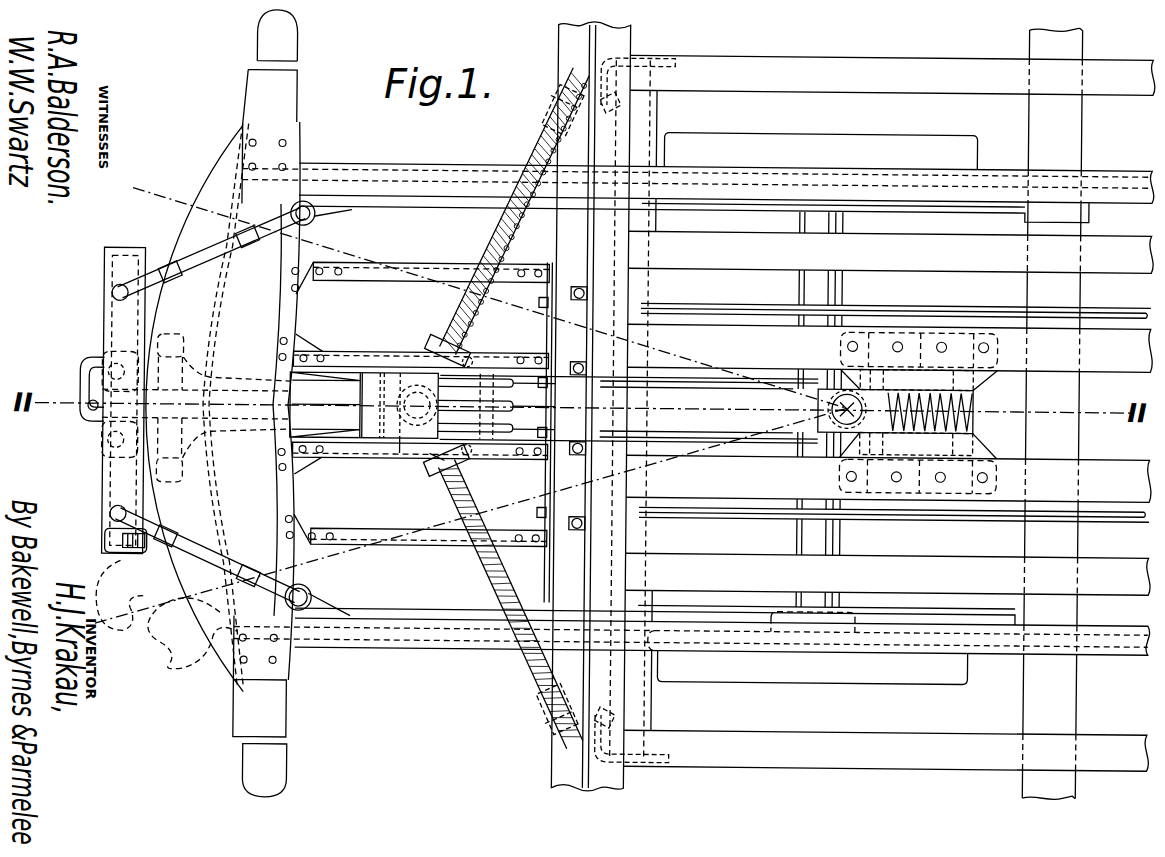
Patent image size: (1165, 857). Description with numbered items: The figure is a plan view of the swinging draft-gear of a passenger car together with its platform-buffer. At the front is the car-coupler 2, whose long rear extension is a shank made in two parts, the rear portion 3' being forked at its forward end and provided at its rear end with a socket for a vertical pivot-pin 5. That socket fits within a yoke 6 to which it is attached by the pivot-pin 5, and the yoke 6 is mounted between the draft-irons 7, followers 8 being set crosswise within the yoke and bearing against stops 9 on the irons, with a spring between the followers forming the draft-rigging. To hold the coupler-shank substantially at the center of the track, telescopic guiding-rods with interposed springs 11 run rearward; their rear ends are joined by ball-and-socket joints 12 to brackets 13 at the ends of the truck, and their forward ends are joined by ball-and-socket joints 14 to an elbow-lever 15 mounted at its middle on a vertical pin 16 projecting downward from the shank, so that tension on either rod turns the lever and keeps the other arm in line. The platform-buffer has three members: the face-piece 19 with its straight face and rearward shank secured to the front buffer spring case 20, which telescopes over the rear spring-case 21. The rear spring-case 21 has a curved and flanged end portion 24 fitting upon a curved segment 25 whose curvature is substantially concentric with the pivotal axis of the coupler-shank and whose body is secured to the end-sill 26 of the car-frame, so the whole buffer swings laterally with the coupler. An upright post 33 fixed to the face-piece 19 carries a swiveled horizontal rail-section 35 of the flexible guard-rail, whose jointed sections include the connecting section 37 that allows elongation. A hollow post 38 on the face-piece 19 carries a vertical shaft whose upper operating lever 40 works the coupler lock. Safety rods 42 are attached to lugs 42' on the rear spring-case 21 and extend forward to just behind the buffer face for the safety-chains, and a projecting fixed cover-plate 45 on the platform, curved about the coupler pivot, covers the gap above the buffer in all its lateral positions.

The car-coupler 2 is at (82, 390).
The rear portion of coupler-shank 3' is at (629, 409).
The vertical pivot-pin 5 is at (840, 418).
The yoke 6 is at (973, 418).
The draft-irons 7 is at (917, 410).
The followers 8 is at (984, 386).
The stops 9 is at (852, 378).
The springs of guiding-rods 11 is at (508, 226).
The ball-and-socket joints 12 is at (560, 129).
The brackets 13 is at (592, 97).
The ball-and-socket joints 14 is at (440, 470).
The elbow-lever 15 is at (399, 460).
The vertical pin 16 is at (428, 404).
The face-piece of buffer 19 is at (110, 336).
The front buffer spring case 20 is at (364, 405).
The rear spring-case 21 is at (418, 406).
The curved and flanged end portion 24 is at (493, 394).
The curved segment 25 is at (508, 470).
The end-sill 26 is at (549, 408).
The upright post 33 is at (320, 408).
The horizontal rail-sections 35 is at (208, 258).
The rail-section 37 is at (244, 253).
The hollow post 38 is at (106, 543).
The operating lever 40 is at (470, 538).
The safety rods 42 is at (390, 403).
The lugs 42' is at (456, 423).
The fixed cover-plate 45 is at (490, 298).